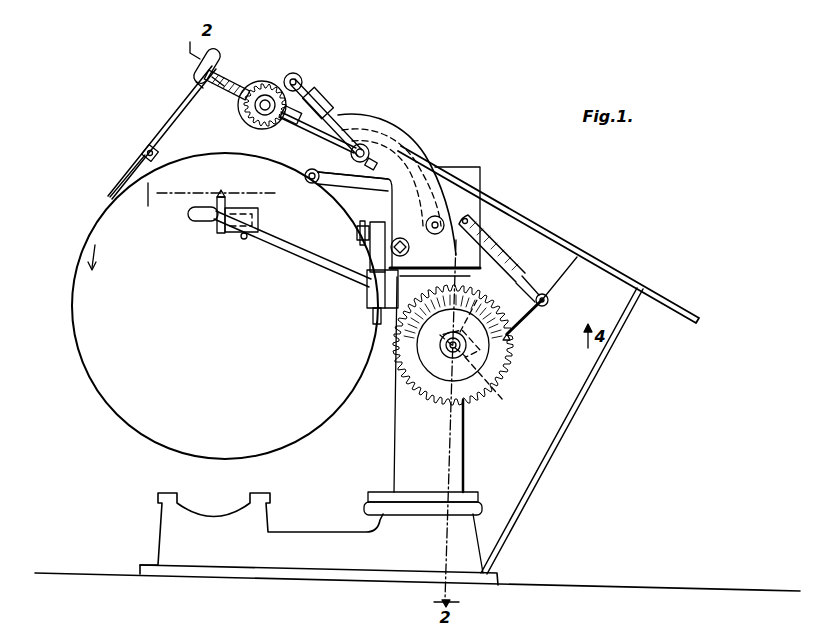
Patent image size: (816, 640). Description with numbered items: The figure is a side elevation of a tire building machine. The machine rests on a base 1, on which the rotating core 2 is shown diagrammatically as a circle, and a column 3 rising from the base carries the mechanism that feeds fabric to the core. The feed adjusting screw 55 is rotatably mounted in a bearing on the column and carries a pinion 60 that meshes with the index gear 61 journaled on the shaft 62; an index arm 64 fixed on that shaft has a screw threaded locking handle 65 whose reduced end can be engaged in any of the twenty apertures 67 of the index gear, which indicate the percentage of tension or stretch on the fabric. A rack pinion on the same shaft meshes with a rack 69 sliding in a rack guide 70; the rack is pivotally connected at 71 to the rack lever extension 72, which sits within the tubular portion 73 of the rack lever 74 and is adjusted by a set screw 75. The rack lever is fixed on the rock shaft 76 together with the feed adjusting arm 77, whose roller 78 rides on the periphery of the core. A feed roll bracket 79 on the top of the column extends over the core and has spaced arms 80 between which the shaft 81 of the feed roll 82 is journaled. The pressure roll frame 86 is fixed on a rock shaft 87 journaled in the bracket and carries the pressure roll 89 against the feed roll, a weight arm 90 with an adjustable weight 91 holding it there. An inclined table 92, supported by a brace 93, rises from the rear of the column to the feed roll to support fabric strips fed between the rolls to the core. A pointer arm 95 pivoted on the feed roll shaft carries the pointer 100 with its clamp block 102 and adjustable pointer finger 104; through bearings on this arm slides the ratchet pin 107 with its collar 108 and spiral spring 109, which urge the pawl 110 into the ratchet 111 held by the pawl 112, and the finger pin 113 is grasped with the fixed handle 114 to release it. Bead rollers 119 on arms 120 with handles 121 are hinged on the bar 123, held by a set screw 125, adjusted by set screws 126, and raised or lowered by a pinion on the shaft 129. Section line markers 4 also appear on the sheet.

The base 1 is at (322, 538).
The core 2 is at (72, 303).
The column 3 is at (464, 470).
The section line 4- 4 is at (138, 194).
The feed adjusting screw 55 is at (481, 304).
The pinion 60 is at (399, 221).
The index gear 61 is at (500, 372).
The shaft 62 is at (420, 380).
The index arm 64 is at (441, 353).
The screw threaded locking handle 65 is at (440, 349).
The apertures 67 is at (511, 337).
The rack 69 is at (536, 315).
The rack guide 70 is at (490, 388).
The pivotal connection 71 is at (549, 300).
The rack lever extension 72 is at (546, 295).
The tubular portion 73 is at (509, 259).
The rack lever 74 is at (460, 240).
The set screw 75 is at (577, 256).
The rock shaft 76 is at (442, 225).
The feed adjusting arm 77 is at (349, 183).
The roller 78 is at (305, 182).
The feed roll bracket 79 is at (430, 152).
The spaced arms 80 is at (332, 116).
The shaft of the feed roll 81 is at (256, 114).
The feed roll 82 is at (262, 129).
The pressure roll frame 86 is at (346, 123).
The rock shaft 87 is at (370, 148).
The pressure roll 89 is at (297, 73).
The weight arm 90 is at (322, 108).
The adjustable weight 91 is at (318, 97).
The inclined table 92 is at (624, 276).
The brace 93 is at (569, 421).
The pointer arm 95 is at (246, 78).
The pointer 100 is at (183, 106).
The clamp block 102 is at (143, 152).
The adjustable pointer finger 104 is at (133, 163).
The ratchet pin 107 is at (238, 70).
The collar 108 is at (238, 94).
The spiral spring 109 is at (222, 95).
The pawl 110 is at (263, 86).
The ratchet 111 is at (283, 62).
The pawl 112 is at (305, 128).
The finger pin 113 is at (206, 46).
The fixed handle 114 is at (200, 63).
The bead rollers 119 is at (212, 196).
The arms 120 is at (291, 246).
The handles 121 is at (186, 214).
The bar 123 is at (367, 282).
The set screw 125 is at (356, 232).
The set screws 126 is at (427, 220).
The shaft 129 is at (340, 278).